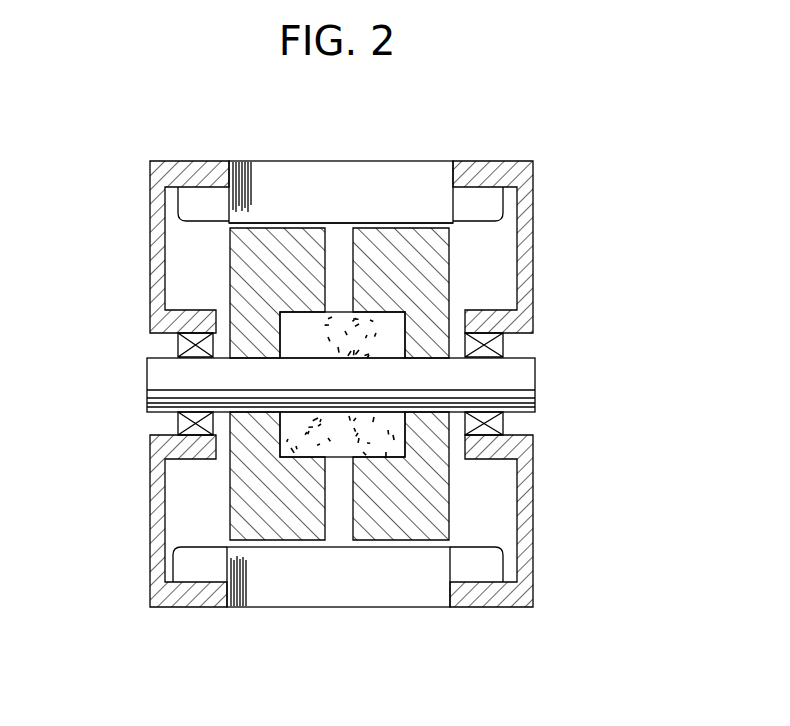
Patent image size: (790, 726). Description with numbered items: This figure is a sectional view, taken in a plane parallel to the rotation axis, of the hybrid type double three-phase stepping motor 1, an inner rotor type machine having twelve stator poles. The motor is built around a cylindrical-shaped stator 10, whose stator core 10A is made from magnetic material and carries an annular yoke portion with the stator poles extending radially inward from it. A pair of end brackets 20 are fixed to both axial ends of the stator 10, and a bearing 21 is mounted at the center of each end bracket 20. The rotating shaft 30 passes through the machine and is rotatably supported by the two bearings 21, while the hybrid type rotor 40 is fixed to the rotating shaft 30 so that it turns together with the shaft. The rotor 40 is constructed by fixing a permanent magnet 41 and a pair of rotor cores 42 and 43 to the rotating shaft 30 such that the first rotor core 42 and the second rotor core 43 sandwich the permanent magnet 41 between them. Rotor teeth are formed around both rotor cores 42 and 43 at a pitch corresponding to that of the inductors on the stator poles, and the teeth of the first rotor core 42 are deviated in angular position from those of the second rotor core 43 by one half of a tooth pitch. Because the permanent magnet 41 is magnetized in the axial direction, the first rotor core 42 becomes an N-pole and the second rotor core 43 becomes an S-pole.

The hybrid type double three-phase stepping motor 1 is at (487, 158).
The stator 10 is at (307, 161).
The stator core 10A is at (421, 168).
The end bracket 20 is at (150, 168).
The bearing 21 is at (178, 349).
The rotating shaft 30 is at (527, 378).
The hybrid type rotor 40 is at (283, 657).
The permanent magnet 41 is at (338, 452).
The first rotor core 42 is at (293, 530).
The second rotor core 43 is at (397, 527).